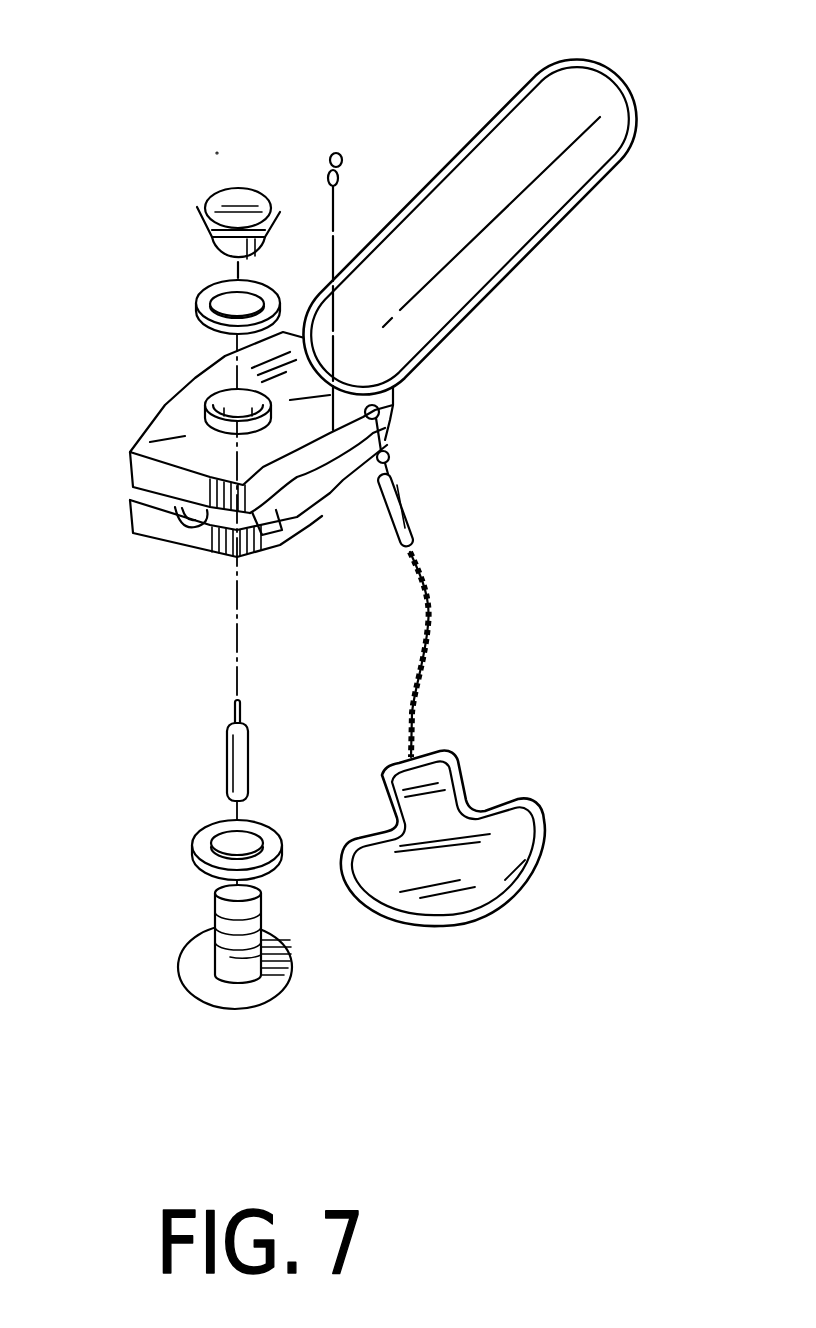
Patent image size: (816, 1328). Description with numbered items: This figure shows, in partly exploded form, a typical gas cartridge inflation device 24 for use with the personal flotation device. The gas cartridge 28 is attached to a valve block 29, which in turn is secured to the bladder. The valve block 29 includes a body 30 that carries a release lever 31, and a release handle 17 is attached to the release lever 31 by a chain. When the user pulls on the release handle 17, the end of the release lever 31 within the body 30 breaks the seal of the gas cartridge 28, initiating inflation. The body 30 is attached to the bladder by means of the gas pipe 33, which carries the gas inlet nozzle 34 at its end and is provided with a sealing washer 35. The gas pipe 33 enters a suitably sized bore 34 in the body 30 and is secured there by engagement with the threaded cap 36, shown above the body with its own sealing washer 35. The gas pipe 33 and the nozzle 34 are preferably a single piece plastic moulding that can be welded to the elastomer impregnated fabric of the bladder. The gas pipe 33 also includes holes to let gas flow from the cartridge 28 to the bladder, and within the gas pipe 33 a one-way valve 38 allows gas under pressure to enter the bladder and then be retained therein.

The pole grip assembly 24 is at (197, 129).
The gas cartridge 28 is at (567, 163).
The valve block 29 is at (473, 419).
The body 30 is at (148, 523).
The release lever 31 is at (287, 500).
The gas pipe 33 is at (290, 957).
The gas inlet nozzle / bore 34 is at (190, 393).
The sealing washer 35 is at (193, 307).
The threaded cap 36 is at (203, 203).
The one-way valve 38 is at (232, 757).
The release handle 17 is at (560, 850).